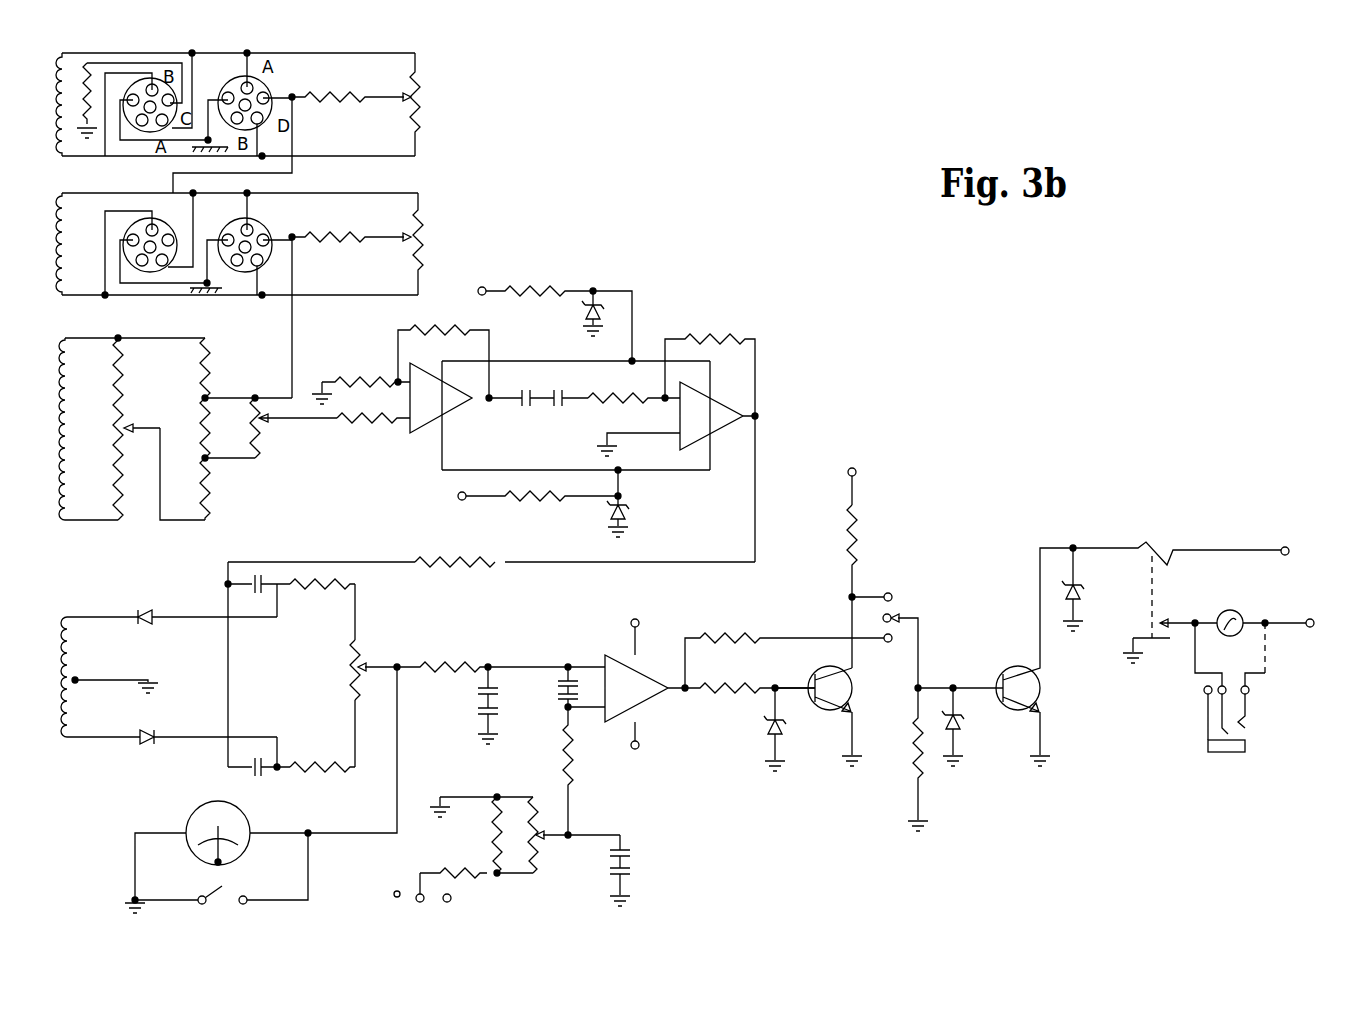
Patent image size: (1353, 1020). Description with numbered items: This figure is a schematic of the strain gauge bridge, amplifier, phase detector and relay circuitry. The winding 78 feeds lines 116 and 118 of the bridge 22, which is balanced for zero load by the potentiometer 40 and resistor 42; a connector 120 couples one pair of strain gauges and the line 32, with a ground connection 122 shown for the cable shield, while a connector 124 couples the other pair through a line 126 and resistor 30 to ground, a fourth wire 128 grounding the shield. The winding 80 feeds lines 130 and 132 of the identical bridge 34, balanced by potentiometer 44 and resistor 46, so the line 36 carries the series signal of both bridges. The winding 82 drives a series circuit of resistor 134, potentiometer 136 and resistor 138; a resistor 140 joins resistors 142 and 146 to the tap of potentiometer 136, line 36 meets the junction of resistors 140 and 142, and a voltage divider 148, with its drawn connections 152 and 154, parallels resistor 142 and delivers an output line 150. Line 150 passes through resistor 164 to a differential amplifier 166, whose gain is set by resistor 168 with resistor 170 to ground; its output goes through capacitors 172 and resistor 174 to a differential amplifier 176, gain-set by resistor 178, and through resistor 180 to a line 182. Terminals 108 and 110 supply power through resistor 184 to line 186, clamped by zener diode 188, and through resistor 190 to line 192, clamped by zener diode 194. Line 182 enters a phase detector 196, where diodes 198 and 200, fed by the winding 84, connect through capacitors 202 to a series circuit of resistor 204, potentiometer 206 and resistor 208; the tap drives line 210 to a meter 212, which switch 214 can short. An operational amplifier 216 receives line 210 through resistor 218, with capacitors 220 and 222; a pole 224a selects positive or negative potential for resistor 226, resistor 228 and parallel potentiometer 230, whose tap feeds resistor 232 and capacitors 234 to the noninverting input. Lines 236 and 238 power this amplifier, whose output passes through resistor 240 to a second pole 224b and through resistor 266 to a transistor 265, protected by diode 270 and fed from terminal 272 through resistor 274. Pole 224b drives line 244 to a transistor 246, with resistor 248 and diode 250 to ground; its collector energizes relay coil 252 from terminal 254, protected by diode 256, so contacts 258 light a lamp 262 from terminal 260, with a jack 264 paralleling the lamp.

The bridge 22 is at (353, 53).
The resistor 30 is at (86, 62).
The line 32 is at (296, 140).
The bridge 34 is at (376, 226).
The line 36 is at (293, 355).
The potentiometer 40 is at (418, 118).
The resistor 42 is at (358, 90).
The potentiometer 44 is at (422, 228).
The resistor 46 is at (342, 240).
The winding 78 is at (62, 100).
The winding 80 is at (62, 262).
The winding 82 is at (64, 420).
The winding 84 is at (65, 650).
The terminal 108 is at (482, 288).
The terminal 110 is at (460, 500).
The line 116 is at (225, 52).
The line 118 is at (372, 156).
The connector 120 is at (272, 88).
The ground connection 122 is at (211, 97).
The connector 124 is at (150, 82).
The line 126 is at (169, 62).
The fourth wire 128 is at (140, 140).
The line 130 is at (318, 193).
The line 132 is at (340, 300).
The resistor 134 is at (122, 385).
The potentiometer 136 is at (118, 428).
The resistor 138 is at (120, 500).
The resistor 140 is at (208, 355).
The resistor 142 is at (205, 425).
The resistor 146 is at (210, 480).
The voltage divider 148 is at (258, 440).
The output line 150 is at (300, 422).
The conductor 152 is at (262, 470).
The conductor 154 is at (258, 398).
The resistor 164 is at (372, 420).
The differential amplifier 166 is at (428, 431).
The resistor 168 is at (450, 330).
The resistor 170 is at (365, 380).
The capacitors 172 is at (558, 406).
The resistor 174 is at (592, 397).
The differential amplifier 176 is at (728, 430).
The resistor 178 is at (715, 339).
The resistor 180 is at (465, 567).
The line 182 is at (275, 562).
The resistor 184 is at (550, 290).
The line 186 is at (540, 361).
The zener diode 188 is at (580, 318).
The resistor 190 is at (535, 500).
The line 192 is at (500, 470).
The zener diode 194 is at (630, 510).
The phase detector 196 is at (206, 678).
The diode 198 is at (145, 625).
The diode 200 is at (150, 742).
The capacitors 202 is at (262, 584).
The resistor 204 is at (318, 592).
The potentiometer 206 is at (350, 668).
The resistor 208 is at (312, 762).
The line 210 is at (398, 770).
The meter 212 is at (212, 800).
The switch 214 is at (243, 905).
The operational amplifier 216 is at (608, 655).
The resistor 218 is at (445, 664).
The capacitors 220 is at (482, 695).
The capacitors 222 is at (560, 685).
The pole 224a is at (412, 898).
The second pole 224b is at (895, 597).
The resistor 226 is at (450, 870).
The resistor 228 is at (492, 838).
The potentiometer 230 is at (540, 855).
The resistor 232 is at (560, 760).
The capacitors 234 is at (640, 858).
The line 236 is at (640, 645).
The line 238 is at (640, 725).
The resistor 240 is at (730, 638).
The line 244 is at (920, 650).
The transistor 246 is at (1005, 672).
The resistor 248 is at (912, 762).
The diode 250 is at (958, 730).
The relay coil 252 is at (1160, 548).
The terminal 254 is at (1287, 548).
The diode 256 is at (1083, 588).
The contacts 258 is at (1152, 645).
The terminal 260 is at (1330, 605).
The lamp 262 is at (1228, 636).
The jack 264 is at (1228, 755).
The transistor 265 is at (815, 668).
The resistor 266 is at (728, 690).
The diode 270 is at (770, 745).
The terminal 272 is at (855, 470).
The resistor 274 is at (860, 540).